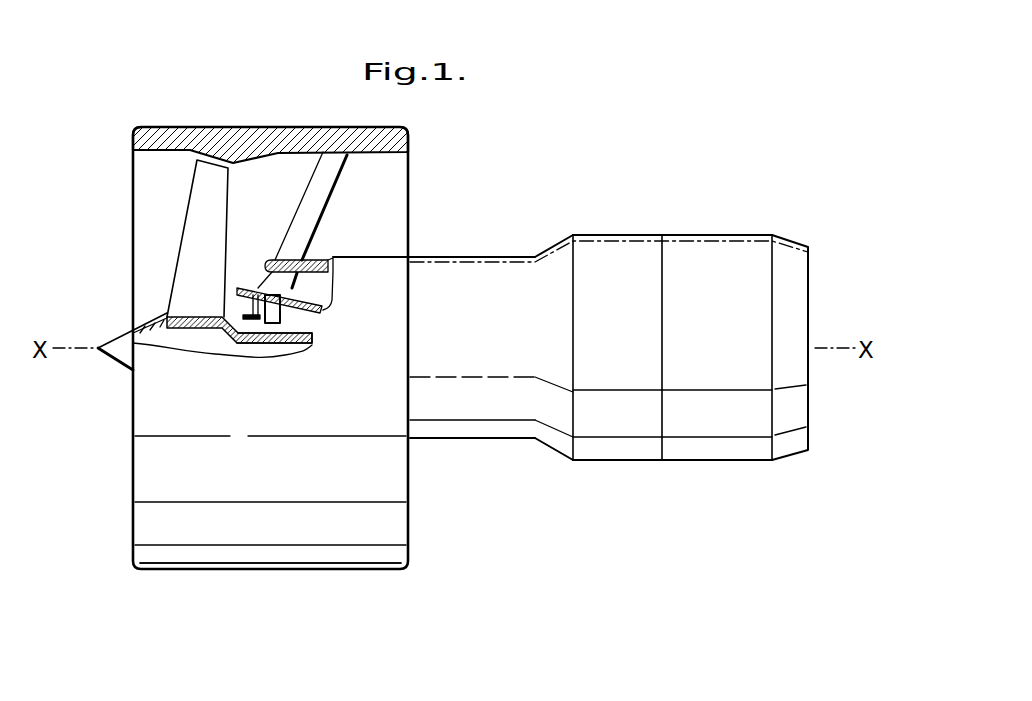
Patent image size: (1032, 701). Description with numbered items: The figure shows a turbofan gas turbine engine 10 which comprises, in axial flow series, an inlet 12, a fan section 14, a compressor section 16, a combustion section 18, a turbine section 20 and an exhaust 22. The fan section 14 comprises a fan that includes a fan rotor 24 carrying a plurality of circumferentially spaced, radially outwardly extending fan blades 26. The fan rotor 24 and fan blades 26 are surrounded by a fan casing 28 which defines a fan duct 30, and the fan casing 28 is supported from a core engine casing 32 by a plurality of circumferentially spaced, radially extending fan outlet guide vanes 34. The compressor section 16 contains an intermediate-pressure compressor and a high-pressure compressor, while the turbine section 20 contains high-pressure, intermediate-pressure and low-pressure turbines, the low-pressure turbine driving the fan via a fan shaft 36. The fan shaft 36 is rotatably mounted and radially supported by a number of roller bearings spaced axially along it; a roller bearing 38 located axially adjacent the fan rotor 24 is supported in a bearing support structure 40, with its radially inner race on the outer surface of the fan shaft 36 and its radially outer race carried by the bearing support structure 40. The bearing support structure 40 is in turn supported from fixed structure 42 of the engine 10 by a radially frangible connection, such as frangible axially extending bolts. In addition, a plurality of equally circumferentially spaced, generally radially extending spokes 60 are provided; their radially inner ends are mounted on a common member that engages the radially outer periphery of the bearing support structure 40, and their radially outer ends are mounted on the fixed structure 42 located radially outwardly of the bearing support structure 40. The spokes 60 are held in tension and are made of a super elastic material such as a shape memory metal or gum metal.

The turbofan gas turbine engine 10 is at (602, 193).
The inlet 12 is at (130, 528).
The fan section 14 is at (267, 553).
The compressor section 16 is at (484, 427).
The combustion section 18 is at (621, 445).
The turbine section 20 is at (703, 445).
The exhaust 22 is at (787, 447).
The fan rotor 24 is at (195, 328).
The fan blades 26 is at (197, 218).
The fan casing 28 is at (275, 127).
The fan duct 30 is at (285, 195).
The core engine casing 32 is at (328, 258).
The fan outlet guide vanes 34 is at (328, 183).
The fan shaft 36 is at (295, 345).
The roller bearing 38 is at (247, 341).
The bearing support structure 40 is at (253, 328).
The fixed structure 42 is at (287, 316).
The radially extending spokes 60 is at (250, 312).